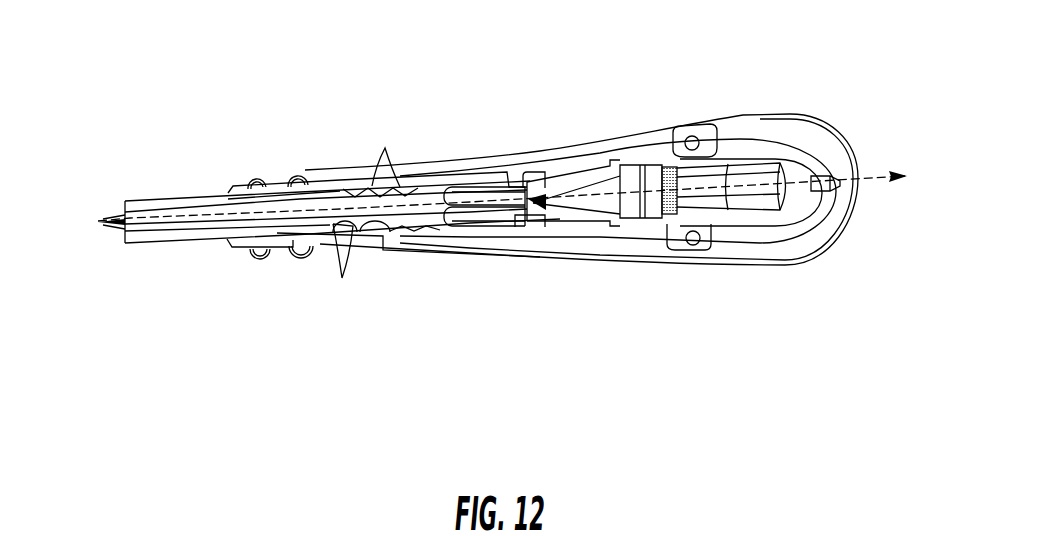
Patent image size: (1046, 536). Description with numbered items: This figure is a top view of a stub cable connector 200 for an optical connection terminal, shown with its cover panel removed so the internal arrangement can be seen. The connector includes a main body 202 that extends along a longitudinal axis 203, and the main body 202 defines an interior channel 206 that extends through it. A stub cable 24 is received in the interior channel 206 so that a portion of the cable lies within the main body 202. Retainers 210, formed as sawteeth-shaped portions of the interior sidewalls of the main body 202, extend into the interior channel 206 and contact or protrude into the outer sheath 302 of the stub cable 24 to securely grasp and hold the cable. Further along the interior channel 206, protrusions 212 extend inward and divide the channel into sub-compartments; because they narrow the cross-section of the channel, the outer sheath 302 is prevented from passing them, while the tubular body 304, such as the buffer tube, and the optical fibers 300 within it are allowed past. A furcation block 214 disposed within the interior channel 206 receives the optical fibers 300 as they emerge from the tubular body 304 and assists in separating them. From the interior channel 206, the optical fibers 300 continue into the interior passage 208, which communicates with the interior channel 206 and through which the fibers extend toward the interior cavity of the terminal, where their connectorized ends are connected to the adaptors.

The stub cable connector 200 is at (372, 88).
The stub cable 24 is at (166, 248).
The outer sheath 302 is at (173, 202).
The retainers 210 is at (390, 143).
The tubular body 304 is at (463, 222).
The protrusions 212 is at (510, 172).
The main body 202 is at (721, 112).
The longitudinal axis 203 is at (869, 177).
The optical fibers 300 is at (589, 172).
The furcation block 214 is at (653, 183).
The interior channel 206 is at (572, 215).
The interior passage 208 is at (773, 212).